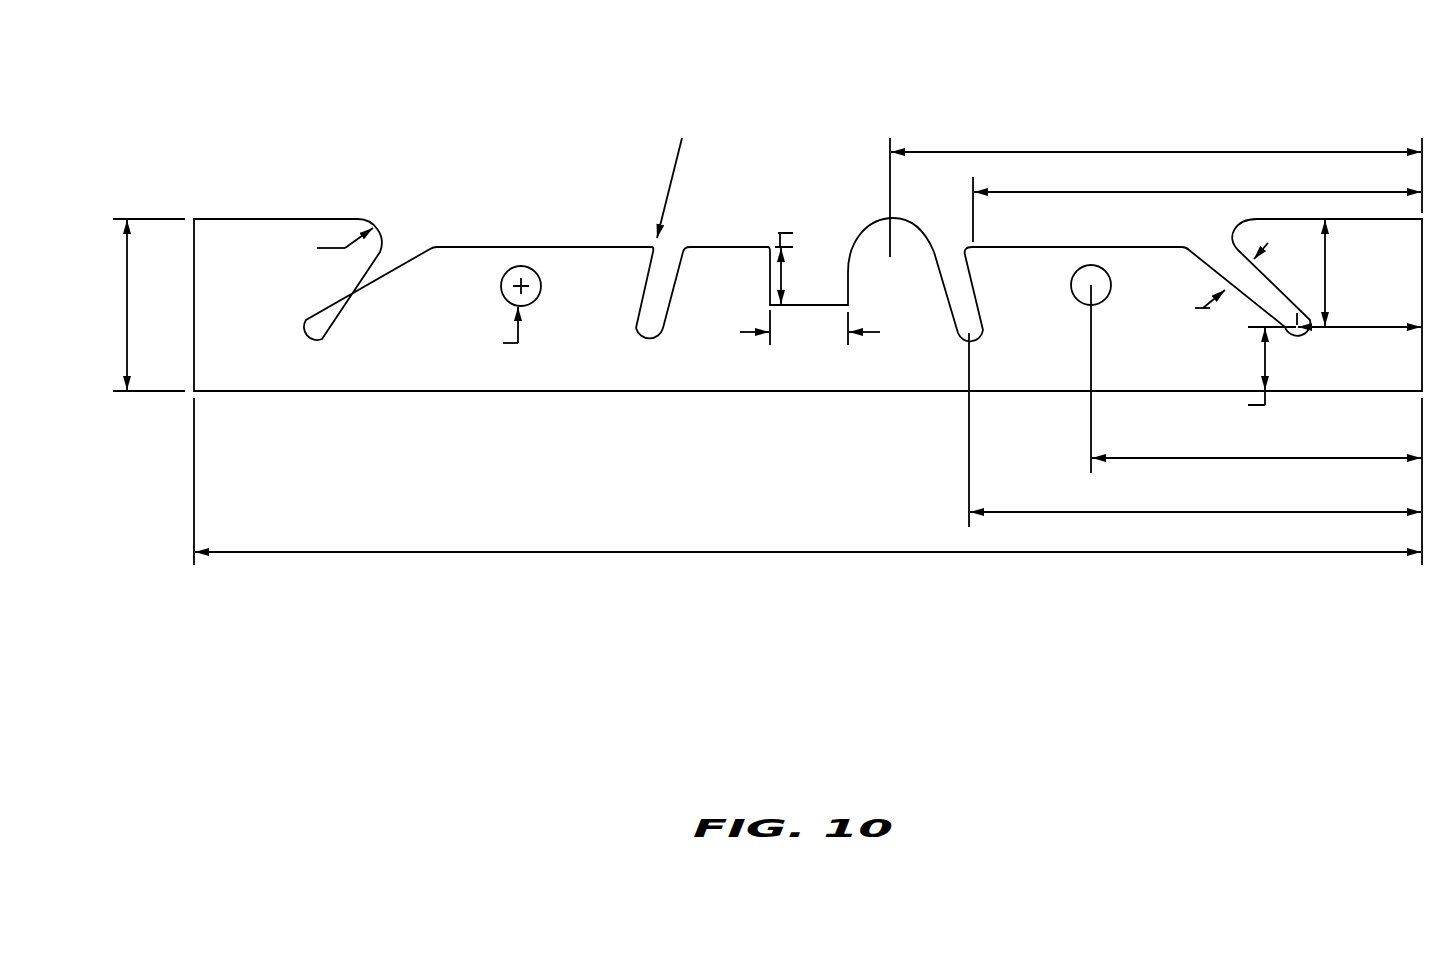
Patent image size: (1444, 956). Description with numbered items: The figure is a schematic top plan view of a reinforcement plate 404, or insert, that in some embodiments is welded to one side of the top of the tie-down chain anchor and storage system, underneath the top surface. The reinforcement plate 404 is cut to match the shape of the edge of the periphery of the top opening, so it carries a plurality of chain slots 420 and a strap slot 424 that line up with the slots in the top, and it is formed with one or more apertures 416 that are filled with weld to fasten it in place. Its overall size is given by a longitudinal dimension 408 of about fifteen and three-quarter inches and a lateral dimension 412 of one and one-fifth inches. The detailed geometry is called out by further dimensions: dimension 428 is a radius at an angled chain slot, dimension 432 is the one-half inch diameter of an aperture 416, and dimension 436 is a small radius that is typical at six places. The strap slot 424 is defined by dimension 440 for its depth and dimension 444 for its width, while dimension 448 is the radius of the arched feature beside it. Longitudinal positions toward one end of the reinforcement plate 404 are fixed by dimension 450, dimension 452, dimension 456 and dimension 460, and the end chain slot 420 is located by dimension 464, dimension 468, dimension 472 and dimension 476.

The reinforcement plate 404 is at (242, 248).
The longitudinal dimension 408 is at (848, 552).
The lateral dimension 412 is at (127, 303).
The apertures 416 is at (523, 266).
The chain slots 420 is at (368, 305).
The strap slot 424 is at (848, 277).
The dimension 428 is at (330, 247).
The dimension 432 is at (520, 343).
The dimension 436 is at (670, 183).
The dimension 440 is at (790, 233).
The dimension 444 is at (875, 332).
The dimension 448 is at (890, 168).
The dimension 450 is at (1063, 152).
The dimension 452 is at (1115, 512).
The dimension 456 is at (1130, 192).
The dimension 460 is at (1200, 458).
The dimension 464 is at (1203, 308).
The dimension 468 is at (1267, 398).
The dimension 472 is at (1327, 273).
The dimension 476 is at (1362, 327).